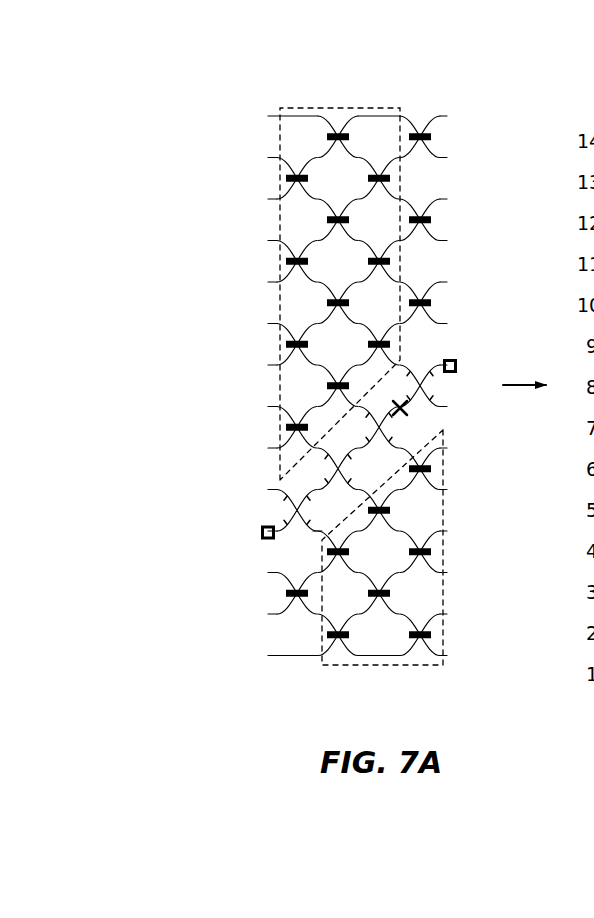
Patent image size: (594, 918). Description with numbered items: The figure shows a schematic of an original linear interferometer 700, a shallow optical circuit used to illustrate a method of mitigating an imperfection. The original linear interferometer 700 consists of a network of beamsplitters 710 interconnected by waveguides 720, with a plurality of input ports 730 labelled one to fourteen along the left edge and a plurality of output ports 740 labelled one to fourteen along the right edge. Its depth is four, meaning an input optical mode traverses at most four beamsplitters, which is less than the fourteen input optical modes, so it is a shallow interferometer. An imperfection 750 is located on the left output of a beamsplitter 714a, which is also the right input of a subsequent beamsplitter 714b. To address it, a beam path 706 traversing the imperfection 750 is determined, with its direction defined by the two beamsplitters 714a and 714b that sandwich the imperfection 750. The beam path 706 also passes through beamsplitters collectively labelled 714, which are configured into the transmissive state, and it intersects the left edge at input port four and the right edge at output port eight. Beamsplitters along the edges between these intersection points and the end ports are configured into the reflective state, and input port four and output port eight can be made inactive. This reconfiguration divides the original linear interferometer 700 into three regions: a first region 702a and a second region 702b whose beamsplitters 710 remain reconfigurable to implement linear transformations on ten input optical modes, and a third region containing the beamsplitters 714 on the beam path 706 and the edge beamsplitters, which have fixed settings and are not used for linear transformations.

The original linear interferometer 700 is at (172, 186).
The input ports 730 is at (252, 100).
The output ports 740 is at (493, 568).
The first region 702a is at (313, 107).
The second region 702b is at (357, 667).
The beamsplitters 714 is at (317, 472).
The beamsplitter 714a is at (403, 378).
The beamsplitter 714b is at (365, 432).
The imperfection 750 is at (390, 406).
The beam path 706 is at (307, 533).
The waveguides 720 is at (358, 563).
The beamsplitters 710 is at (378, 595).